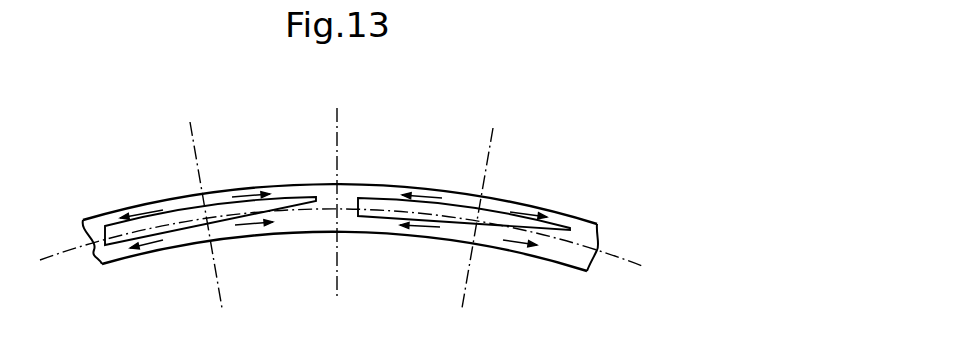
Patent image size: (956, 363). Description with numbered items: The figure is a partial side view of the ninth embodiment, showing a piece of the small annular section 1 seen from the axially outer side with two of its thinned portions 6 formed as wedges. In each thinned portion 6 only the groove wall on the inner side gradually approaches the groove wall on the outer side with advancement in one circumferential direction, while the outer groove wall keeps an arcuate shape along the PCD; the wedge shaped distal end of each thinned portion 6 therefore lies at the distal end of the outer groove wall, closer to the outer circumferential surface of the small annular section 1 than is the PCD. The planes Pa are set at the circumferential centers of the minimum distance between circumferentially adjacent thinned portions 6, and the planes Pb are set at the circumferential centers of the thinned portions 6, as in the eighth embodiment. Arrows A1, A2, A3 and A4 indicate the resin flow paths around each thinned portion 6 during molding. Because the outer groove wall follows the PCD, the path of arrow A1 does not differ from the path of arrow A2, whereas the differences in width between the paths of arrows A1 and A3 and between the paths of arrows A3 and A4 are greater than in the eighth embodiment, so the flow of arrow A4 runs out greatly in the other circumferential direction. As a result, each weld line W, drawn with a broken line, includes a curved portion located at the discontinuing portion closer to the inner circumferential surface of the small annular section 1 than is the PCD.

The small annular section 1 is at (575, 148).
The thinned portion 6 is at (180, 221).
The element PCD is at (627, 262).
The plane Pa is at (338, 142).
The plane Pb is at (197, 157).
The weld line W is at (330, 203).
The arrow A1 is at (394, 182).
The arrow A2 is at (281, 186).
The arrow A3 is at (386, 255).
The arrow A4 is at (285, 256).